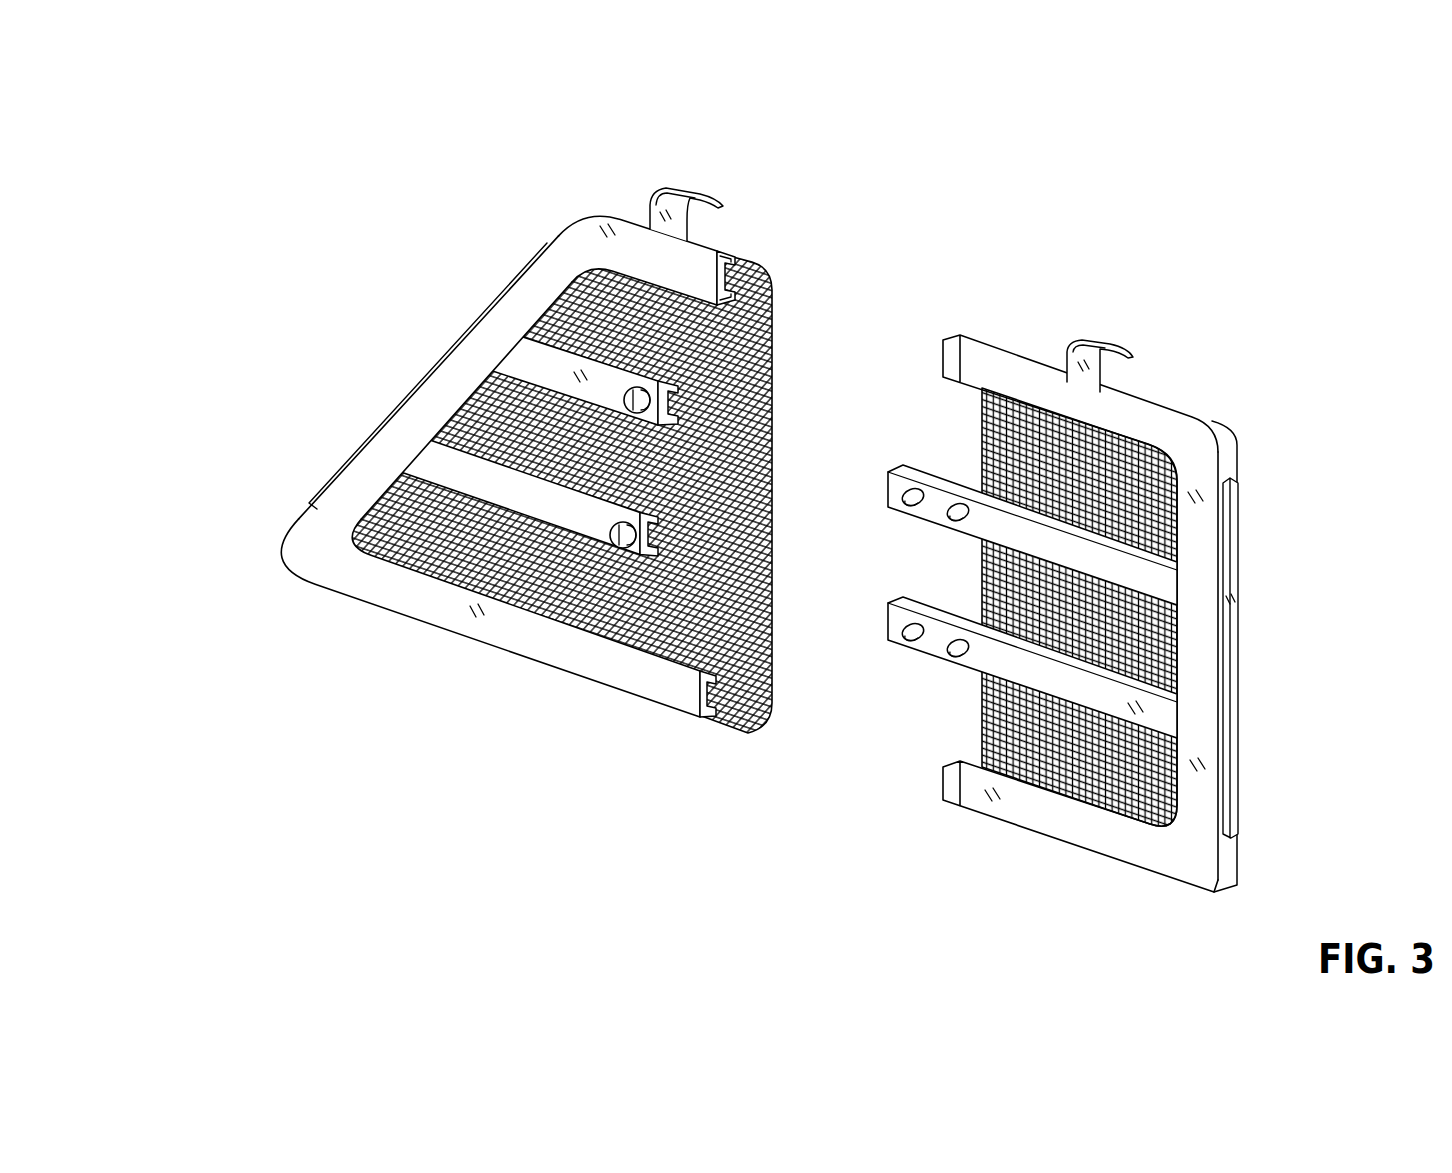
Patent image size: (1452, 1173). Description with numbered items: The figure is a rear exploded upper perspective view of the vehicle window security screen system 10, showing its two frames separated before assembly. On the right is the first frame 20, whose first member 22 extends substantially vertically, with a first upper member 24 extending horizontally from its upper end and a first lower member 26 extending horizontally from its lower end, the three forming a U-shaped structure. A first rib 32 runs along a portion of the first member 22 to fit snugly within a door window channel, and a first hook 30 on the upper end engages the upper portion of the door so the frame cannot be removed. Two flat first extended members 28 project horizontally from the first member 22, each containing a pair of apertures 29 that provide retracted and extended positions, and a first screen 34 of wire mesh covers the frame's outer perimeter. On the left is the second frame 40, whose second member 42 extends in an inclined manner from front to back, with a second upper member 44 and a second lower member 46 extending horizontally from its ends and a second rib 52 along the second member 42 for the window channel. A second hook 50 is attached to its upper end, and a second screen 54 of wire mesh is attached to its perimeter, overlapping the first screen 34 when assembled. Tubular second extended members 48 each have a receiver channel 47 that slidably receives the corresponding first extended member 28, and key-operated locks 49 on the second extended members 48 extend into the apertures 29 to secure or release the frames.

The vehicle window security screen system 10 is at (248, 169).
The first frame 20 is at (1114, 864).
The first member 22 is at (1145, 620).
The first upper member 24 is at (1137, 423).
The first lower member 26 is at (1010, 812).
The first extended members 28 is at (1117, 567).
The apertures 29 is at (960, 522).
The first hook 30 is at (1105, 340).
The first rib 32 is at (1238, 593).
The first screen 34 is at (1003, 733).
The second frame 40 is at (332, 591).
The second member 42 is at (357, 490).
The second upper member 44 is at (631, 242).
The second lower member 46 is at (453, 612).
The receiver channel 47 is at (738, 266).
The second extended members 48 is at (532, 362).
The locks 49 is at (646, 414).
The second hook 50 is at (687, 190).
The second rib 52 is at (522, 282).
The second screen 54 is at (760, 337).